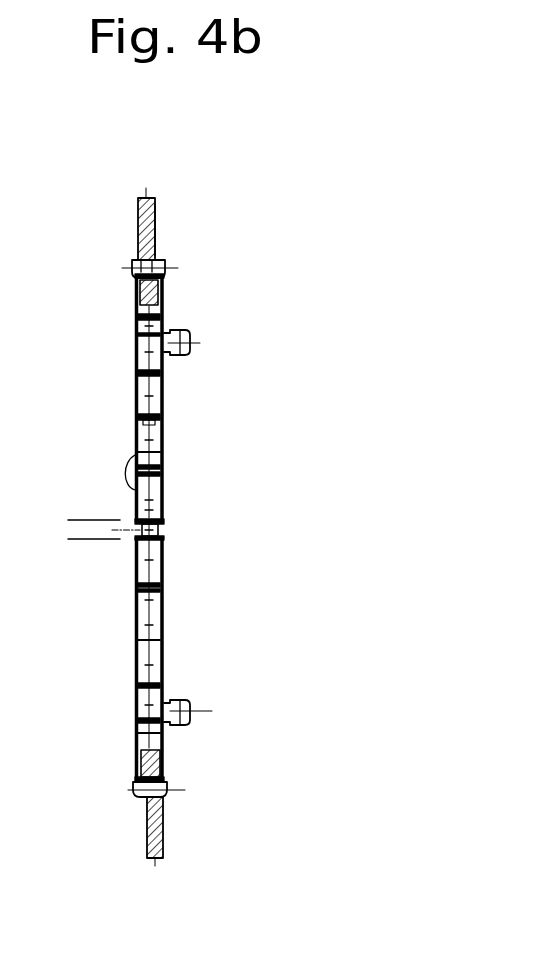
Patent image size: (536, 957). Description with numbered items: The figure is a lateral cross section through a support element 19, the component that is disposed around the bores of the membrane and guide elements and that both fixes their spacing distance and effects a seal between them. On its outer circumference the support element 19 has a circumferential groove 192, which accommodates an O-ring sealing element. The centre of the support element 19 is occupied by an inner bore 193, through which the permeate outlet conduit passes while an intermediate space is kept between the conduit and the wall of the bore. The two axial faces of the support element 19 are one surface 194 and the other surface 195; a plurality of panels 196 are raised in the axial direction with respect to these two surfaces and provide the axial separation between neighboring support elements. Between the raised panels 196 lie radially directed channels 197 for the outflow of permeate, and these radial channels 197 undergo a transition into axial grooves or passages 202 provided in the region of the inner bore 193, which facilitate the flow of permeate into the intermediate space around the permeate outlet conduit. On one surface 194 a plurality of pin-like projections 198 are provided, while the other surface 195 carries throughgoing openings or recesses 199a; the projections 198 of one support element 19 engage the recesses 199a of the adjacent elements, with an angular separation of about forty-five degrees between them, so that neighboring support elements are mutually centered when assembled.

The support element 19 is at (158, 452).
The circumferential groove 192 is at (143, 197).
The inner bore 193 is at (155, 538).
The one surface 194 is at (156, 218).
The other surface 195 is at (148, 800).
The panels 196 is at (163, 458).
The radially directed channels 197 is at (170, 528).
The pin-like projections 198 is at (178, 331).
The throughgoing openings or recesses 199a is at (157, 263).
The axial grooves or passages 202 is at (85, 500).